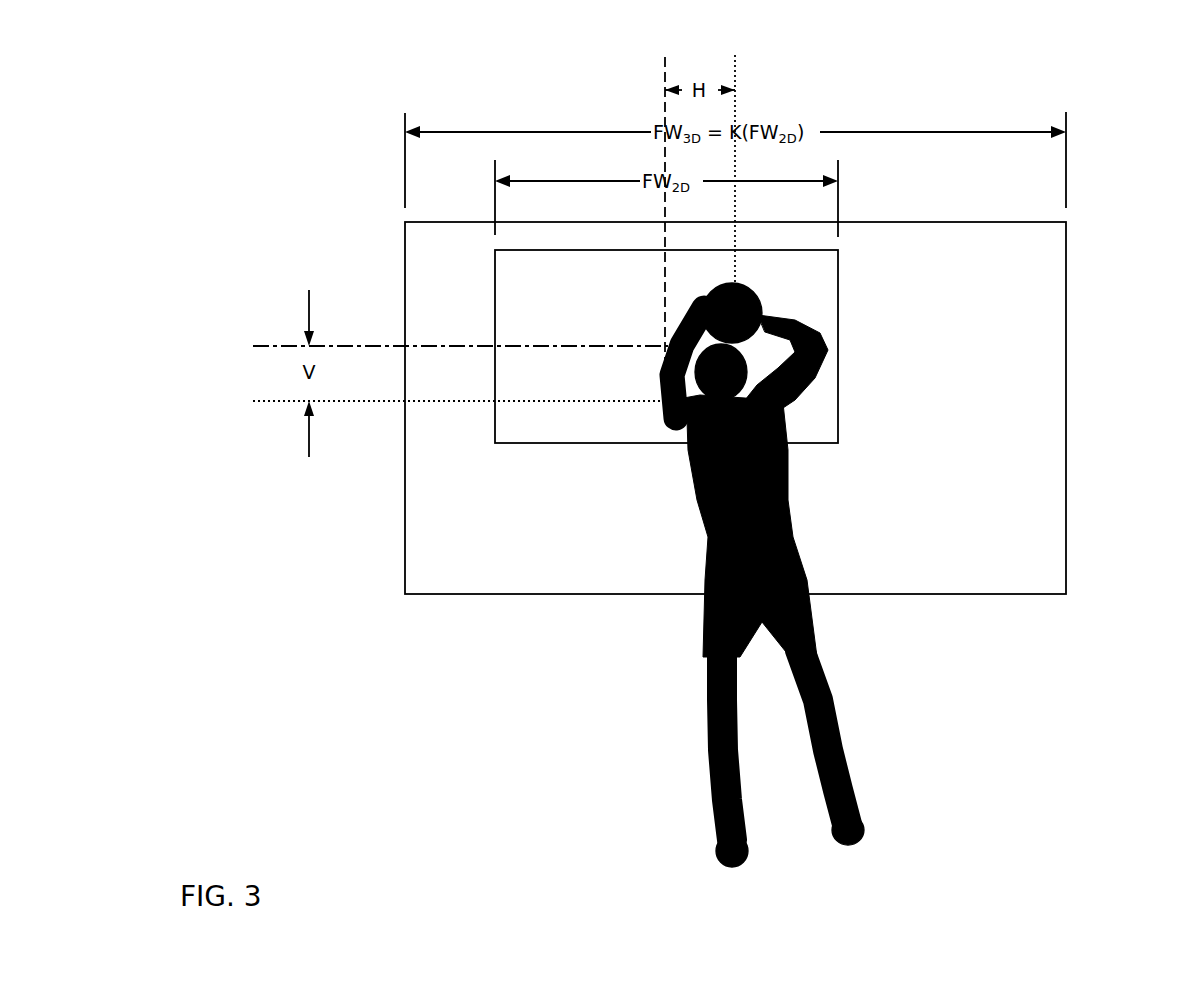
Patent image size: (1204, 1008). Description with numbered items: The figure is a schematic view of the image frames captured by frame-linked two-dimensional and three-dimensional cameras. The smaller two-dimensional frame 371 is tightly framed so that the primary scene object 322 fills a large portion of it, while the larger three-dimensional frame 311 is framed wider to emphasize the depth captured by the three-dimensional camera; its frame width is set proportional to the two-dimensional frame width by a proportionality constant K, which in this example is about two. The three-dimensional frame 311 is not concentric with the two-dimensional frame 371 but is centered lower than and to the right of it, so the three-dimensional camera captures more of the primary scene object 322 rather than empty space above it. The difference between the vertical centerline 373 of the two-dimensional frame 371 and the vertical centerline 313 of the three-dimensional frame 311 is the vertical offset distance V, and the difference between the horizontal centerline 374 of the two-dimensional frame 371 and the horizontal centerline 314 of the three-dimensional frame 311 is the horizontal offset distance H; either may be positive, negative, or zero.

The 3D frame 311 is at (1066, 424).
The 2D frame 371 is at (838, 283).
The horizontal centerline of the 2D frame 374 is at (665, 84).
The horizontal centerline of the 3D frame 314 is at (737, 82).
The vertical centerline of the 2D frame 373 is at (283, 345).
The vertical centerline of the 3D frame 313 is at (285, 402).
The primary scene object 322 is at (828, 688).